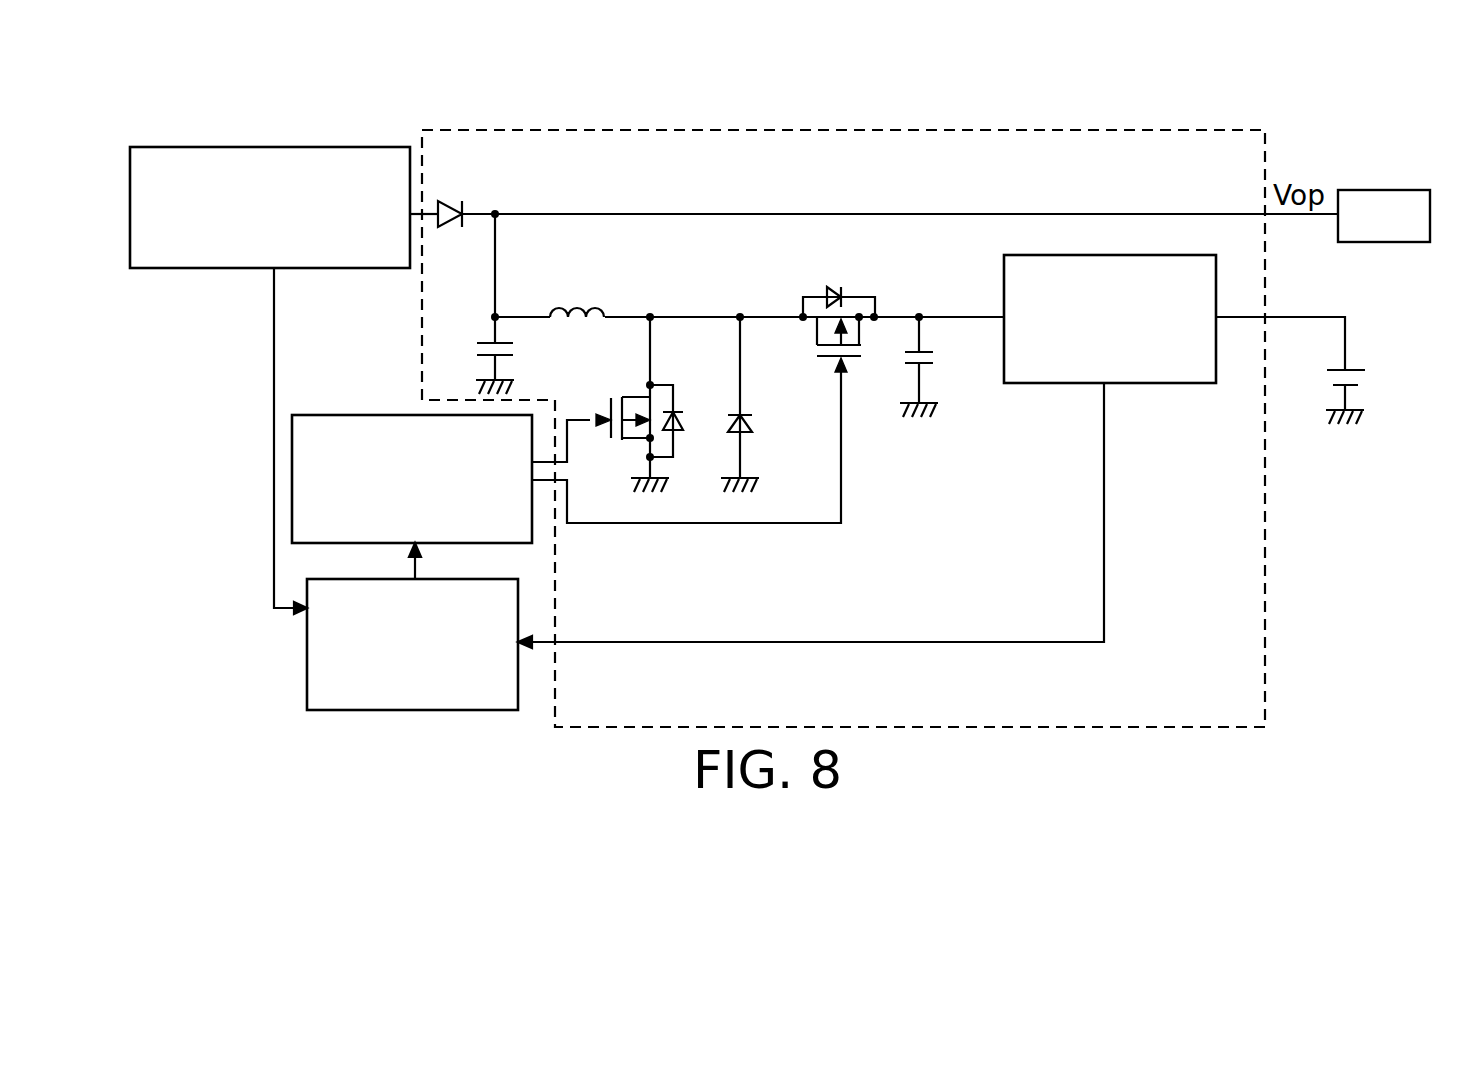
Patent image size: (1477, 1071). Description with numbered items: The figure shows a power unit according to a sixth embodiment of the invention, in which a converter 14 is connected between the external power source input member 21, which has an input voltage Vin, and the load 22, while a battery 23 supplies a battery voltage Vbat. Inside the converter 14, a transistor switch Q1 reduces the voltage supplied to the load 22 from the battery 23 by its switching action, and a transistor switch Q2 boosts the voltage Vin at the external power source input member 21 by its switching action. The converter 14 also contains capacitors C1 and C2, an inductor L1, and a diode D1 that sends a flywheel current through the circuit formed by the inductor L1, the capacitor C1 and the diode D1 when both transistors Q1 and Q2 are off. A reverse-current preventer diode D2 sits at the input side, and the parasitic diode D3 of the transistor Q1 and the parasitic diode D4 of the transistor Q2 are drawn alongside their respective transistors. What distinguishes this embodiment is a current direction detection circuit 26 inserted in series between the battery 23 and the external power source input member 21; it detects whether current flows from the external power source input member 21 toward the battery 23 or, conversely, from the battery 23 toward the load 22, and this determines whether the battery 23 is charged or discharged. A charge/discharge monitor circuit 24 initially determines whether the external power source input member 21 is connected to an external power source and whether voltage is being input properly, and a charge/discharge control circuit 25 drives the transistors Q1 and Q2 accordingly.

The converter 14 is at (683, 130).
The external power source input member 21 is at (267, 147).
The load 22 is at (1372, 190).
The battery 23 is at (1347, 368).
The charge/discharge monitor circuit 24 is at (325, 712).
The charge/discharge control circuit 25 is at (318, 415).
The current direction detection circuit 26 is at (1004, 272).
The diode D1 is at (759, 404).
The reverse-current preventer diode D2 is at (454, 194).
The transistor Q1 parasitic diode D3 is at (839, 284).
The transistor Q2 parasitic diode D4 is at (687, 423).
The inductor L1 is at (577, 293).
The capacitor C1 is at (938, 367).
The capacitor C2 is at (476, 355).
The transistor switch Q1 is at (853, 353).
The transistor switch Q2 is at (627, 404).